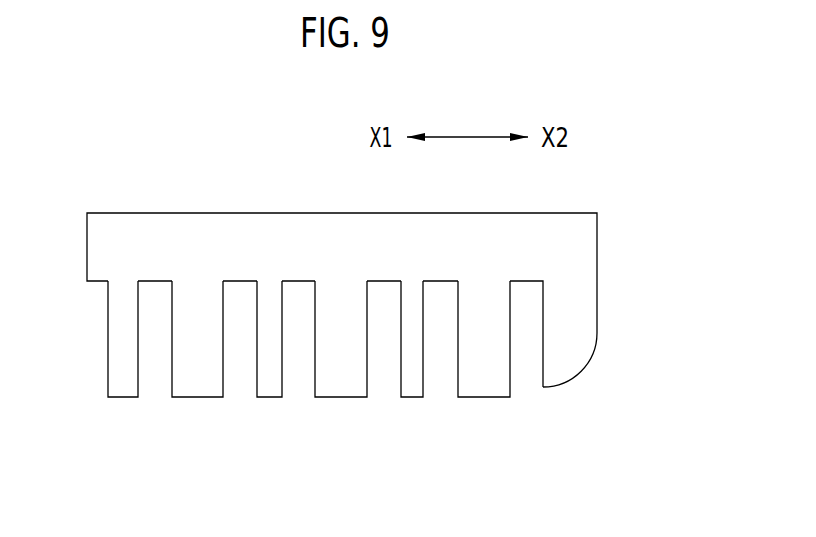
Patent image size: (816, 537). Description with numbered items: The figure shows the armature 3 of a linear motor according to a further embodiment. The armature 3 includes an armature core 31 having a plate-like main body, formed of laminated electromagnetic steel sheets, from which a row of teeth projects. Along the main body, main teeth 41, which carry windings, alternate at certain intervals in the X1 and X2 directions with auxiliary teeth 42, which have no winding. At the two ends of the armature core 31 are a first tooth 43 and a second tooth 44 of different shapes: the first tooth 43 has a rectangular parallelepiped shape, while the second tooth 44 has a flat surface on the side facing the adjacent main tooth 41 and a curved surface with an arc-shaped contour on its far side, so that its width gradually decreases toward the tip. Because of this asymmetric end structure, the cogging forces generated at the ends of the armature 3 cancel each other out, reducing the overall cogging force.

The armature 3 is at (112, 170).
The armature core 31 is at (577, 245).
The main tooth 41 is at (198, 397).
The auxiliary tooth 42 is at (272, 397).
The first tooth 43 is at (122, 397).
The second tooth 44 is at (579, 370).